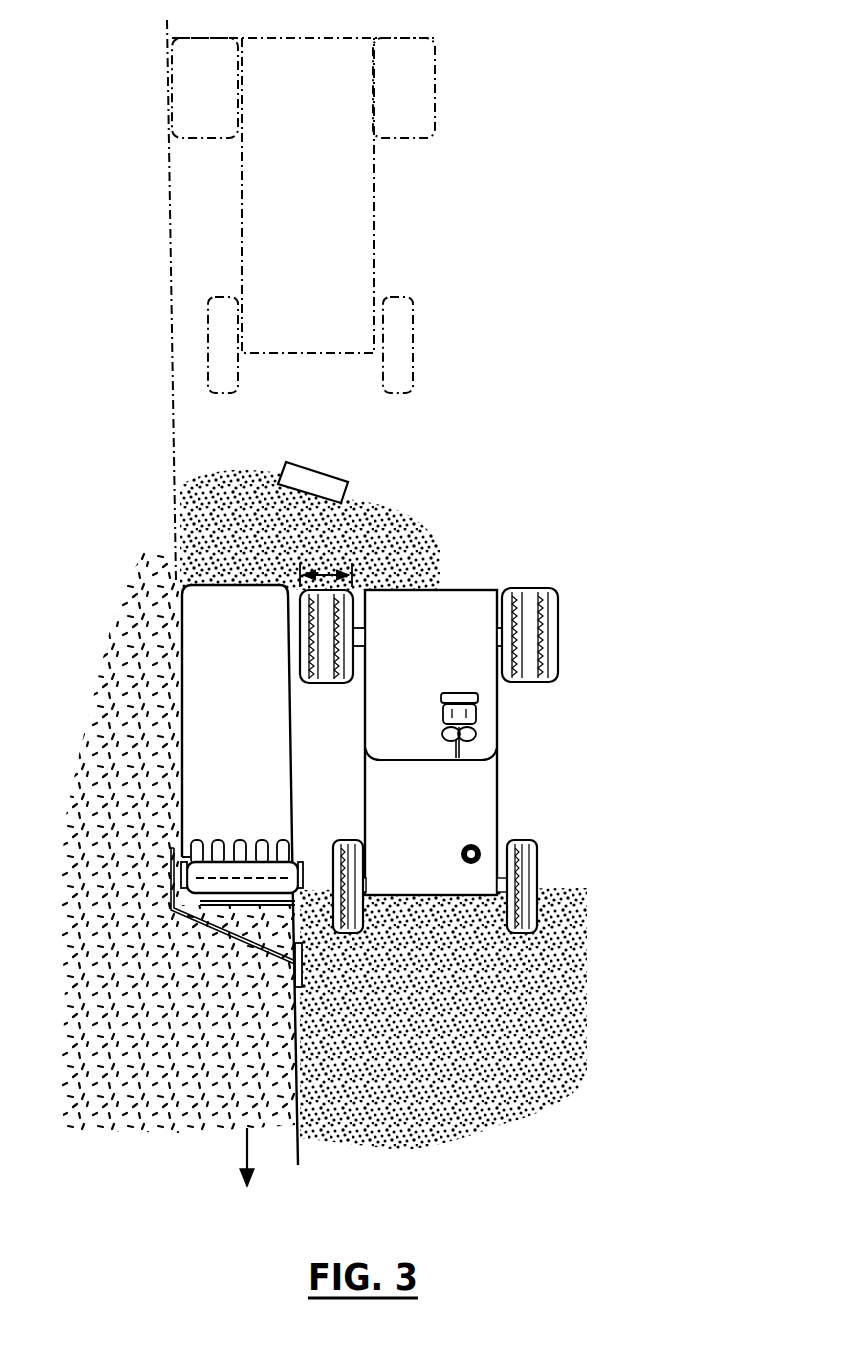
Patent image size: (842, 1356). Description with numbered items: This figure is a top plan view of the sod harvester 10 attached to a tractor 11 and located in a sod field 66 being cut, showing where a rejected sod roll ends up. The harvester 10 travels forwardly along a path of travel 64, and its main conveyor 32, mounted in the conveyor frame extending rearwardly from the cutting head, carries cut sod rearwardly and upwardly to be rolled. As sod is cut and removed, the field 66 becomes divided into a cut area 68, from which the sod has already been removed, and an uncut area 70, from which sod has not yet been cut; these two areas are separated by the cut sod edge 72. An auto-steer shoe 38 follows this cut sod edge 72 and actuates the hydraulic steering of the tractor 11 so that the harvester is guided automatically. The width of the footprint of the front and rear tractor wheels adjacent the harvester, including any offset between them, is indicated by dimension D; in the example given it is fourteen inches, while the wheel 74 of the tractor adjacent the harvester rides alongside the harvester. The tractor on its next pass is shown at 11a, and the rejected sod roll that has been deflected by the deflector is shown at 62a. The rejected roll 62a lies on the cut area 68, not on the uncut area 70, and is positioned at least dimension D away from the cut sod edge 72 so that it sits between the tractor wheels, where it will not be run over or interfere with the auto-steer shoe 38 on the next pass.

The sod harvester 10 is at (185, 770).
The tractor 11 is at (455, 760).
The tractor on its next pass 11a is at (385, 243).
The main conveyor 32 is at (253, 707).
The auto-steer shoe 38 is at (303, 975).
The rejected sod roll 62a is at (330, 473).
The path of travel 64 is at (244, 1150).
The sod field 66 is at (721, 963).
The cut area 68 is at (529, 1154).
The uncut area 70 is at (60, 1026).
The cut sod edge 72 is at (300, 1045).
The tractor wheel 74 is at (332, 685).
The dimension D is at (343, 572).